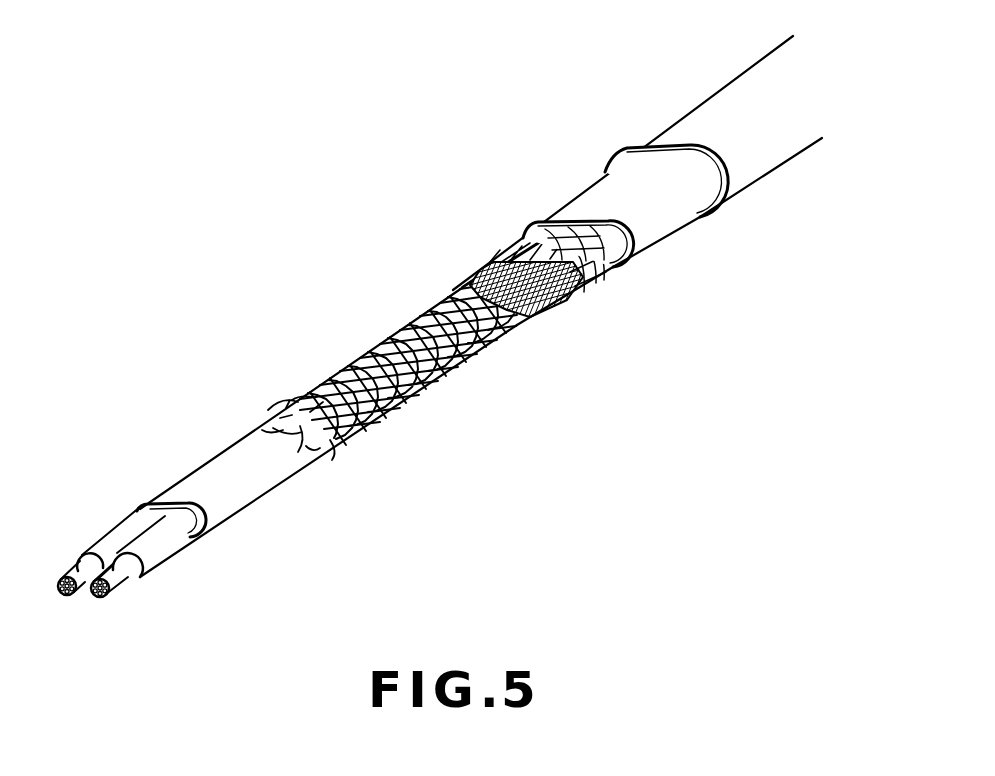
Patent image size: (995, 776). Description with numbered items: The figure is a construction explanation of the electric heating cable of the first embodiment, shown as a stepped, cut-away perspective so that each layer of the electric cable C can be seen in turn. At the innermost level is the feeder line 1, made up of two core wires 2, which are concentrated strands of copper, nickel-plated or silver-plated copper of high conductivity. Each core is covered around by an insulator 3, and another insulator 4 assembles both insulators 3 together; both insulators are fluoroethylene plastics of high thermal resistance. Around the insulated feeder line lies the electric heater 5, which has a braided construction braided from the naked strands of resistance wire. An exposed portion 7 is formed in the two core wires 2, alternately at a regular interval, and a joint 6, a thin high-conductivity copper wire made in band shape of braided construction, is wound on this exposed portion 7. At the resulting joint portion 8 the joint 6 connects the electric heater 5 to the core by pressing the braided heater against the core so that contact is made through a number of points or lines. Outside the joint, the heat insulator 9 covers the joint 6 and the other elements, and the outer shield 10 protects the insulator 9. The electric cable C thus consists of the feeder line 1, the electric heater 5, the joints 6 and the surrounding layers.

The electric cable C is at (333, 212).
The feeder line 1 is at (166, 474).
The core wires 2 is at (61, 578).
The insulator 3 is at (173, 540).
The insulator 4 is at (277, 475).
The electric heater 5 is at (370, 420).
The joint 6 is at (570, 290).
The exposed portion 7 is at (488, 258).
The joint portion 8 is at (548, 313).
The heat insulator 9 is at (607, 187).
The outer shield 10 is at (713, 113).